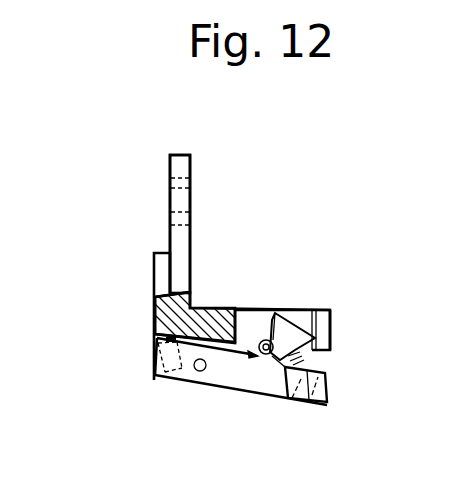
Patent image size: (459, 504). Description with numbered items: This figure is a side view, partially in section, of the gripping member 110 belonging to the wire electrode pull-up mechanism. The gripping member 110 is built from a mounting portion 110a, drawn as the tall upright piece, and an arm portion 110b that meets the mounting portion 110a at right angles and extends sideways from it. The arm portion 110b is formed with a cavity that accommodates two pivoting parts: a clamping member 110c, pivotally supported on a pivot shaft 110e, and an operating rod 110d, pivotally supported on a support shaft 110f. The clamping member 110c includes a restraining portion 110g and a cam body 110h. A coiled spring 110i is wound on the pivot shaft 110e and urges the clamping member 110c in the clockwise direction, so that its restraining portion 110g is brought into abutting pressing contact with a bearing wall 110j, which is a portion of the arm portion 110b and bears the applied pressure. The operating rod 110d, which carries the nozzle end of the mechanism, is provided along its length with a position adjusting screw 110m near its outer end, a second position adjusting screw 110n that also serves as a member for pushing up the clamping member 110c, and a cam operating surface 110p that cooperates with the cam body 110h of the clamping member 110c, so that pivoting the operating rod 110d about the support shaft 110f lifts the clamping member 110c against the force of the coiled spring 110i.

The gripping member 110 is at (141, 260).
The mounting portion 110a is at (185, 238).
The arm portion 110b is at (212, 318).
The clamping member 110c is at (297, 312).
The operating rod 110d is at (322, 377).
The pivot shaft 110e is at (268, 310).
The support shaft 110f is at (200, 371).
The restraining portion 110g is at (312, 310).
The cam body 110h is at (270, 356).
The coiled spring 110i is at (252, 358).
The bearing wall 110j is at (333, 312).
The position adjusting screw 110m is at (155, 340).
The position adjusting screw 110n is at (322, 360).
The cam operating surface 110p is at (285, 394).